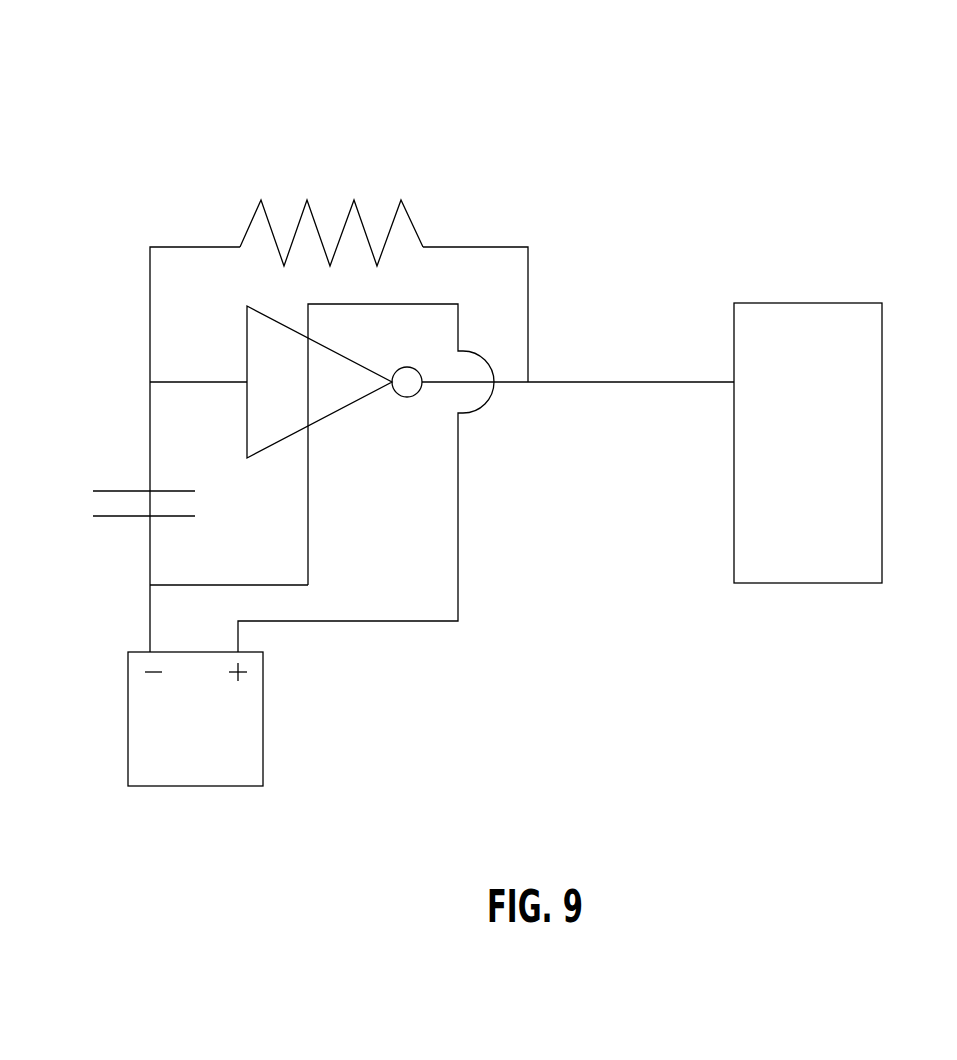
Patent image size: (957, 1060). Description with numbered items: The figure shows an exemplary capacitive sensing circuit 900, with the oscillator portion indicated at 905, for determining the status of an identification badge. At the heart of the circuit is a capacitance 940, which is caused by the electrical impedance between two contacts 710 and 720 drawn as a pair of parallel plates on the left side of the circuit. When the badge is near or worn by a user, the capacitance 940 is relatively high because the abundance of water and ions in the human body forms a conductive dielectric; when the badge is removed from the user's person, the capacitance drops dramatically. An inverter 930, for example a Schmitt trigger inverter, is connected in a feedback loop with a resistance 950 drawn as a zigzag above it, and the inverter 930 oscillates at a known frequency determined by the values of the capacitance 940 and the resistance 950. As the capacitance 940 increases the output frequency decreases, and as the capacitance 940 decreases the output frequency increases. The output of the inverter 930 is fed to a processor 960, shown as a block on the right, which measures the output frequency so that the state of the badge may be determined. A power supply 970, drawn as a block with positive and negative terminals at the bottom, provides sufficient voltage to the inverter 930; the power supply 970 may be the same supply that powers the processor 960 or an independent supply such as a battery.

The sensing circuit 900 is at (510, 37).
The oscillator circuit 905 is at (563, 630).
The resistance 950 is at (331, 207).
The inverter 930 is at (334, 382).
The processor 960 is at (808, 443).
The power supply 970 is at (195, 719).
The capacitance 940 is at (176, 511).
The contact 720 is at (125, 489).
The contact 710 is at (125, 518).